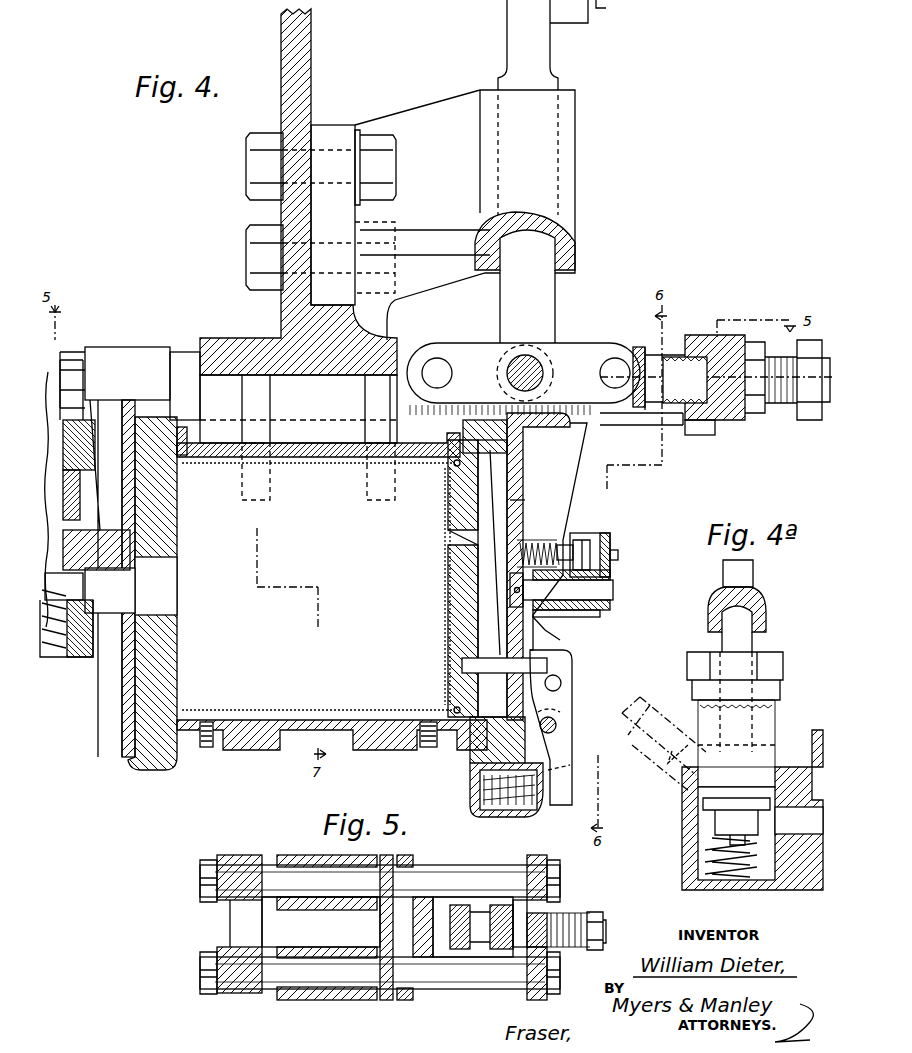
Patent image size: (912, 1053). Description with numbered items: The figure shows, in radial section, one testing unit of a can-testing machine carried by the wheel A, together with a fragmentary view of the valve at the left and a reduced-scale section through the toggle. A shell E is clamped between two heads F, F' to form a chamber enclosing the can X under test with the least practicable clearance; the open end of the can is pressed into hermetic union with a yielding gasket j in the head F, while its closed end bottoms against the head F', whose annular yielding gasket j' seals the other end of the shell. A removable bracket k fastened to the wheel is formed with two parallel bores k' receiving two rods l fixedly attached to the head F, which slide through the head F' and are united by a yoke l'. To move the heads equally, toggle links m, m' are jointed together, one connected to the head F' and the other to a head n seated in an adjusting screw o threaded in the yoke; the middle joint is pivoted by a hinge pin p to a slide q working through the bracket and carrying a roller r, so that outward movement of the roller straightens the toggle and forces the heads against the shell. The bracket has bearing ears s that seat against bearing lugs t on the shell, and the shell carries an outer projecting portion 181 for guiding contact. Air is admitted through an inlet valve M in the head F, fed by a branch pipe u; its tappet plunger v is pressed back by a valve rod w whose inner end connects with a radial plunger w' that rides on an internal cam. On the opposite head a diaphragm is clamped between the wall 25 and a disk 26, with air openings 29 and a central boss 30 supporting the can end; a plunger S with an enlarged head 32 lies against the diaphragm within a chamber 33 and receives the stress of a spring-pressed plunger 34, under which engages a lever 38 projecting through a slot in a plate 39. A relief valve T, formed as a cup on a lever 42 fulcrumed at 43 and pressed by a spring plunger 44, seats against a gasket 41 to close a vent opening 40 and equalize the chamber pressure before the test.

In FIG. 4, the wheel A is at (298, 192).
In FIG. 4, the bracket k is at (443, 215).
In FIG. 5, the bracket k is at (321, 922).
In FIG. 5, the bores k' is at (324, 913).
In FIG. 4, the slide q is at (525, 171).
In FIG. 4, the roller r is at (577, 25).
In FIG. 4, the hinge pin p is at (530, 368).
In FIG. 5, the hinge pin p is at (447, 895).
In FIG. 4, the toggle link m is at (526, 370).
In FIG. 5, the toggle link m is at (385, 929).
In FIG. 4, the toggle link m' is at (535, 373).
In FIG. 5, the toggle link m' is at (496, 966).
In FIG. 4, the head n is at (652, 352).
In FIG. 5, the head n is at (515, 900).
In FIG. 4, the adjusting screw o is at (683, 410).
In FIG. 5, the adjusting screw o is at (577, 950).
In FIG. 4, the bearing ears s is at (298, 409).
In FIG. 4, the rods l is at (185, 370).
In FIG. 5, the rods l is at (380, 947).
In FIG. 5, the yoke l' is at (558, 914).
In FIG. 4, the head F is at (115, 537).
In FIG. 5, the head F is at (226, 924).
In FIG. 4, the head F' is at (528, 588).
In FIG. 5, the head F' is at (407, 943).
In FIG. 4, the tappet plunger v is at (53, 388).
In FIG. 4A, the tappet plunger v is at (752, 640).
In FIG. 4, the yielding gasket j is at (161, 585).
In FIG. 4, the annular yielding gasket j' is at (511, 436).
In FIG. 4, the disk 26 is at (525, 498).
In FIG. 4, the wall 25 is at (570, 525).
In FIG. 4, the spring-pressed plunger 34 is at (575, 540).
In FIG. 4, the plate 39 is at (610, 533).
In FIG. 4, the lever 38 is at (618, 555).
In FIG. 4, the plunger S is at (600, 590).
In FIG. 4, the chamber 33 is at (585, 617).
In FIG. 4, the enlarged head 32 is at (545, 630).
In FIG. 4, the air openings 29 is at (445, 545).
In FIG. 4, the central boss 30 is at (447, 625).
In FIG. 4, the vent opening 40 is at (462, 663).
In FIG. 4, the relief valve T is at (575, 665).
In FIG. 4, the gasket 41 is at (560, 688).
In FIG. 4, the fulcrum 43 is at (556, 727).
In FIG. 4, the lever 42 is at (572, 770).
In FIG. 4, the spring plunger 44 is at (545, 805).
In FIG. 4, the can X is at (310, 468).
In FIG. 4, the bearing lugs t is at (366, 478).
In FIG. 4A, the valve rod w is at (752, 573).
In FIG. 4, the radial plunger w' is at (147, 590).
In FIG. 4A, the radial plunger w' is at (799, 820).
In FIG. 4A, the branch pipe u is at (650, 710).
In FIG. 4, the inlet valve M is at (88, 660).
In FIG. 4A, the inlet valve M is at (682, 838).
In FIG. 4, the shell E is at (332, 736).
In FIG. 4, the projecting portion 181 is at (352, 752).